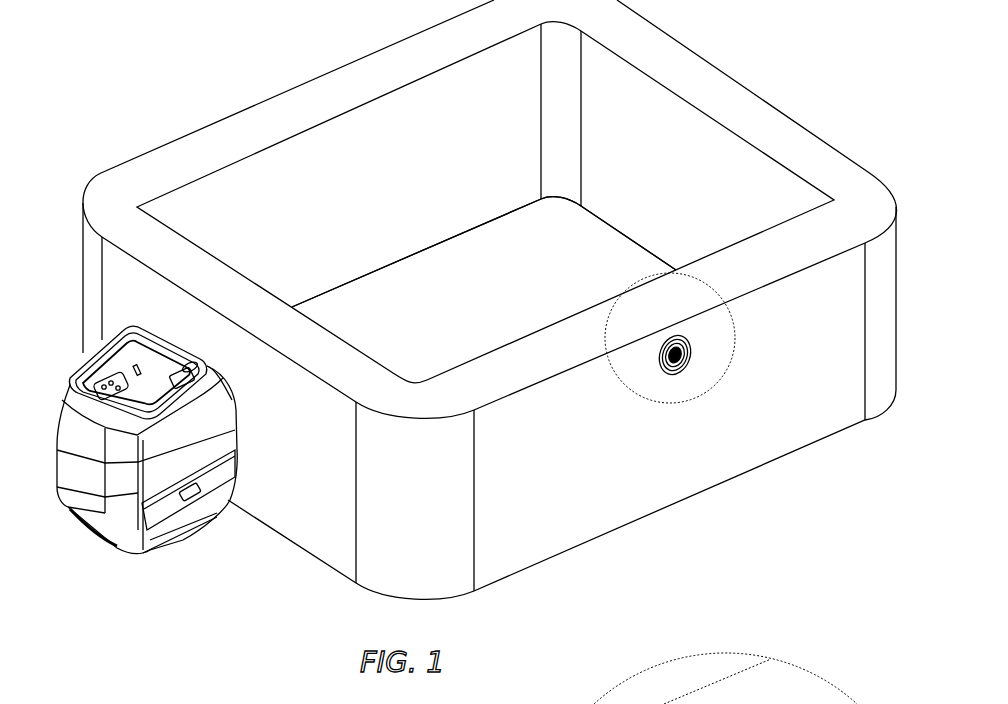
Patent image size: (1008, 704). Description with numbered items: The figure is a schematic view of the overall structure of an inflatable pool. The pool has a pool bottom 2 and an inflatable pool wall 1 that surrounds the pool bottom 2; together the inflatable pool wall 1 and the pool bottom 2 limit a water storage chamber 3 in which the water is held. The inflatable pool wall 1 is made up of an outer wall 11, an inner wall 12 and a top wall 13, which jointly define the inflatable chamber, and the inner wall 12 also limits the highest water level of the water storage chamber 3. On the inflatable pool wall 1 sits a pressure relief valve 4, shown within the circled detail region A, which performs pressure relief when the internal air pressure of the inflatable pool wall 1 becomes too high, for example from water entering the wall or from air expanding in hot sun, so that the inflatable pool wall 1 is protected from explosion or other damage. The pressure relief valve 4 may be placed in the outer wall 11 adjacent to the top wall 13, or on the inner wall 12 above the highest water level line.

The inflatable pool wall 1 is at (302, 112).
The outer wall 11 is at (803, 397).
The inner wall 12 is at (695, 163).
The top wall 13 is at (683, 70).
The water storage chamber 3 is at (453, 170).
The detail region A is at (735, 341).
The pressure relief valve 4 is at (677, 370).
The pool bottom 2 is at (431, 311).